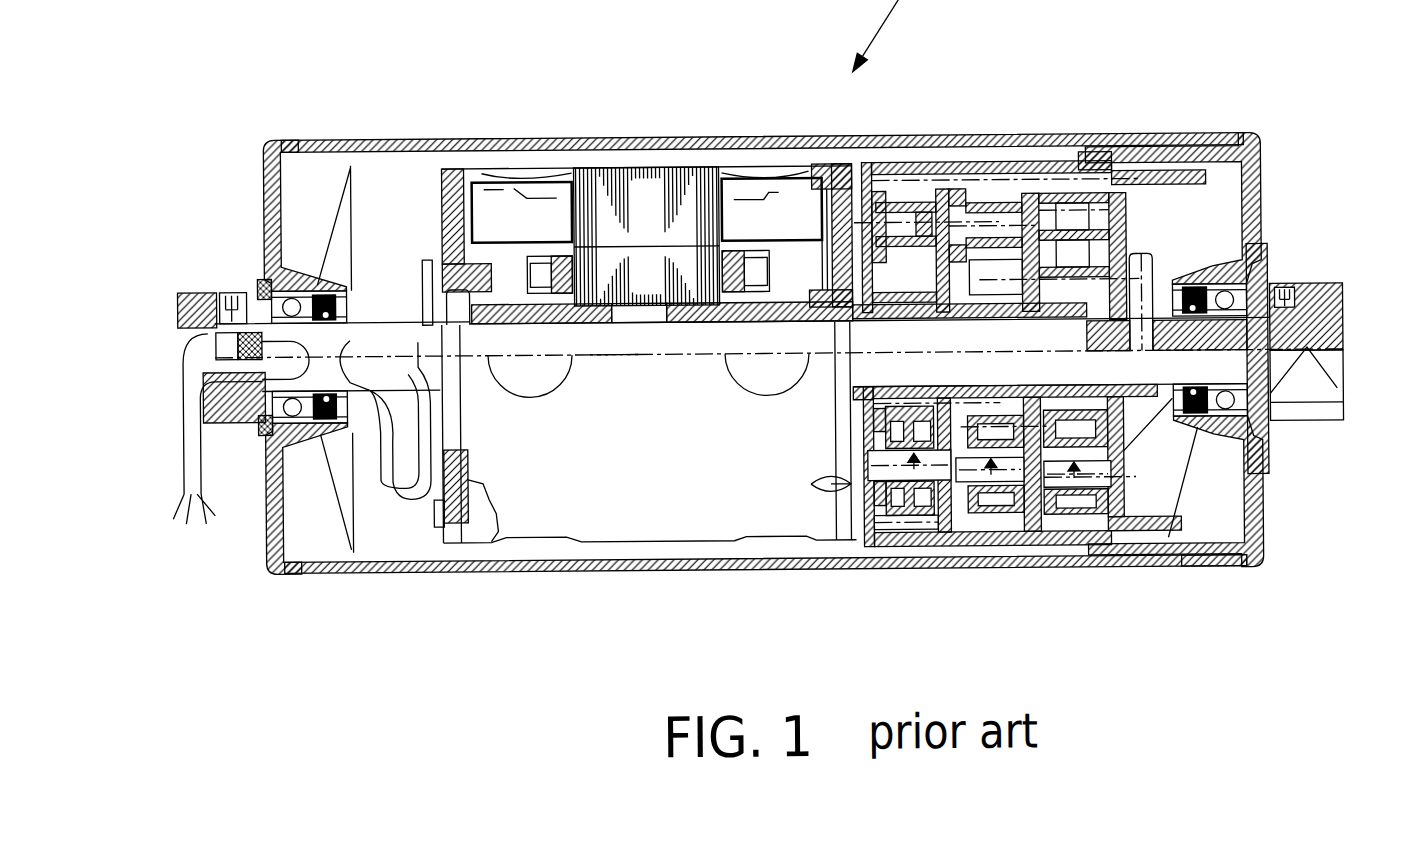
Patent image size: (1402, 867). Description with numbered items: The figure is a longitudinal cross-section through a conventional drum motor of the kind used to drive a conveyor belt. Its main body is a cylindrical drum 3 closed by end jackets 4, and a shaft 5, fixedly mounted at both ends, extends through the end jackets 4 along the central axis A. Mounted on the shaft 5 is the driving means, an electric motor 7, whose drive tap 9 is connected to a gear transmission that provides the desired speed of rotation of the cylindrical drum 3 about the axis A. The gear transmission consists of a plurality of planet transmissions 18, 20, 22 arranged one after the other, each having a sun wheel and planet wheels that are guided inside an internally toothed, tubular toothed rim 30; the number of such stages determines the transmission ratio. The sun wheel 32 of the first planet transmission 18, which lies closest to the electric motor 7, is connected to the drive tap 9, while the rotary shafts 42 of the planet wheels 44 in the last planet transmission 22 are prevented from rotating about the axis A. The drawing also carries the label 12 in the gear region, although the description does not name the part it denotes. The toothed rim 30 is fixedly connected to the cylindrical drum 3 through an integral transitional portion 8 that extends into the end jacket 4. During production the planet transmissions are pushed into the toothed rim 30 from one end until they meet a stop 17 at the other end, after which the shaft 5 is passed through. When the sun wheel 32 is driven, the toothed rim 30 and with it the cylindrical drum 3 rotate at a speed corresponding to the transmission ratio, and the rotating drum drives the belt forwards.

The cylindrical drum 3 is at (583, 144).
The end jacket 4 is at (262, 176).
The shaft 5 is at (1213, 321).
The electric motor 7 is at (667, 167).
The transitional portion 8 is at (1165, 182).
The drive tap 9 is at (867, 396).
The second gear stage 12 is at (988, 225).
The stop 17 is at (1120, 172).
The first planet transmission 18 is at (915, 465).
The planet transmission 20 is at (993, 465).
The last planet transmission 22 is at (1073, 478).
The toothed rim 30 is at (1080, 170).
The sun wheel 32 is at (903, 292).
The rotary shaft 42 is at (1222, 572).
The planet wheel 44 is at (1123, 456).
The axis A is at (612, 354).